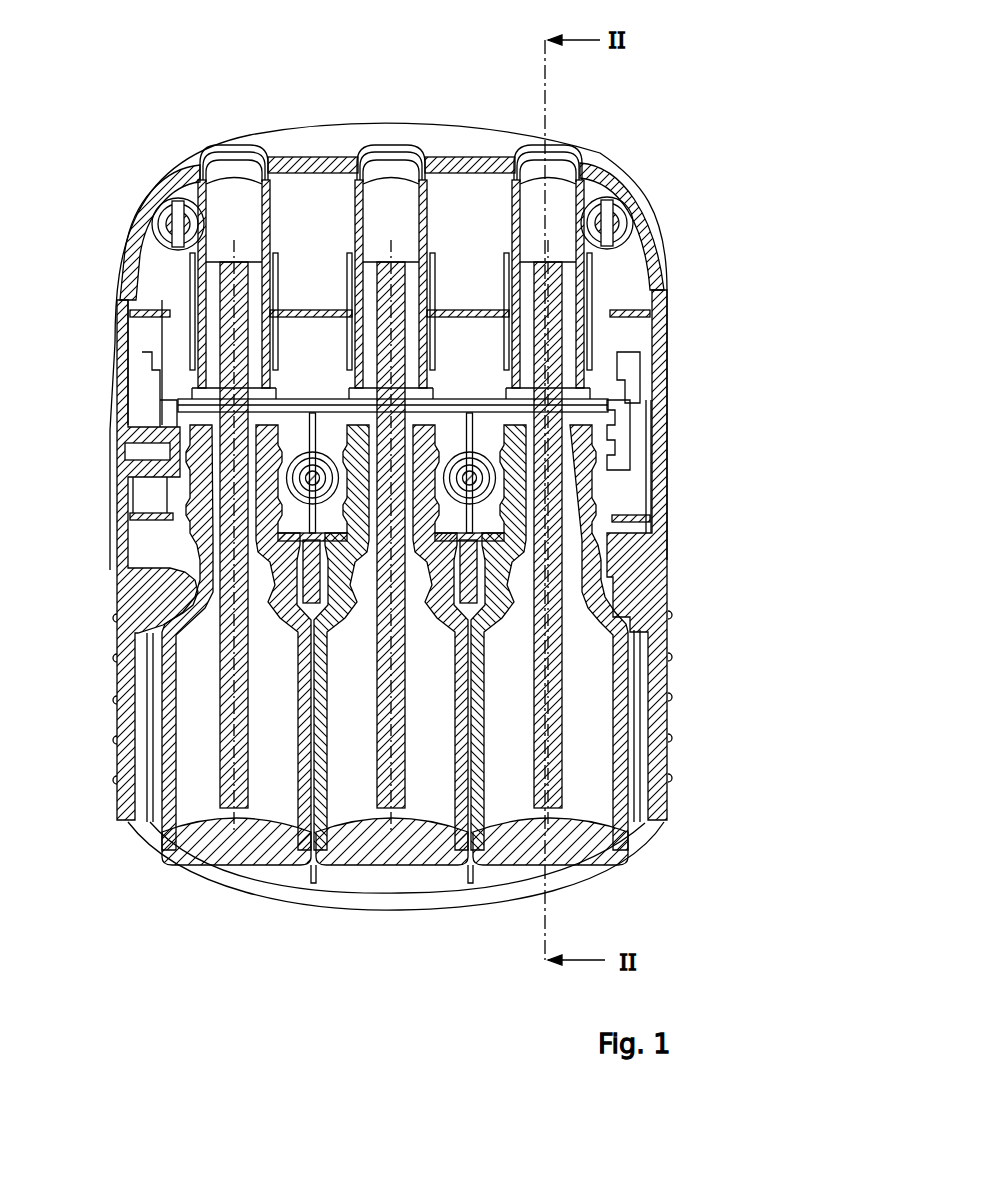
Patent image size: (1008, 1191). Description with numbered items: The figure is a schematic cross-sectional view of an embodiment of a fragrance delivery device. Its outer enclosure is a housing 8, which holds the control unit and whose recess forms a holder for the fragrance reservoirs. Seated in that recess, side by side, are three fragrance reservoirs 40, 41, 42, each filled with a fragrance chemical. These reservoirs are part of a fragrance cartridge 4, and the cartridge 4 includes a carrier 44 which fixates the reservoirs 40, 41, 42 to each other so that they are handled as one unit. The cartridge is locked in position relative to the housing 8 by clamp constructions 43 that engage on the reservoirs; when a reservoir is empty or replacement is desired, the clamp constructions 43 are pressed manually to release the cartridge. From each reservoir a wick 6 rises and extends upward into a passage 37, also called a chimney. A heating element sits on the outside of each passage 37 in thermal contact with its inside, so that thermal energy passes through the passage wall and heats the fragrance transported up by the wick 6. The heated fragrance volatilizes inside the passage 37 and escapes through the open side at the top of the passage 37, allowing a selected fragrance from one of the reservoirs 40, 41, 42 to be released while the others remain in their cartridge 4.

The fragrance cartridge 4 is at (135, 590).
The wick 6 is at (232, 748).
The housing 8 is at (137, 232).
The passage 37 is at (205, 212).
The fragrance reservoir 40 is at (208, 842).
The fragrance reservoir 41 is at (365, 842).
The fragrance reservoir 42 is at (520, 842).
The clamp construction 43 is at (110, 700).
The carrier 44 is at (308, 586).